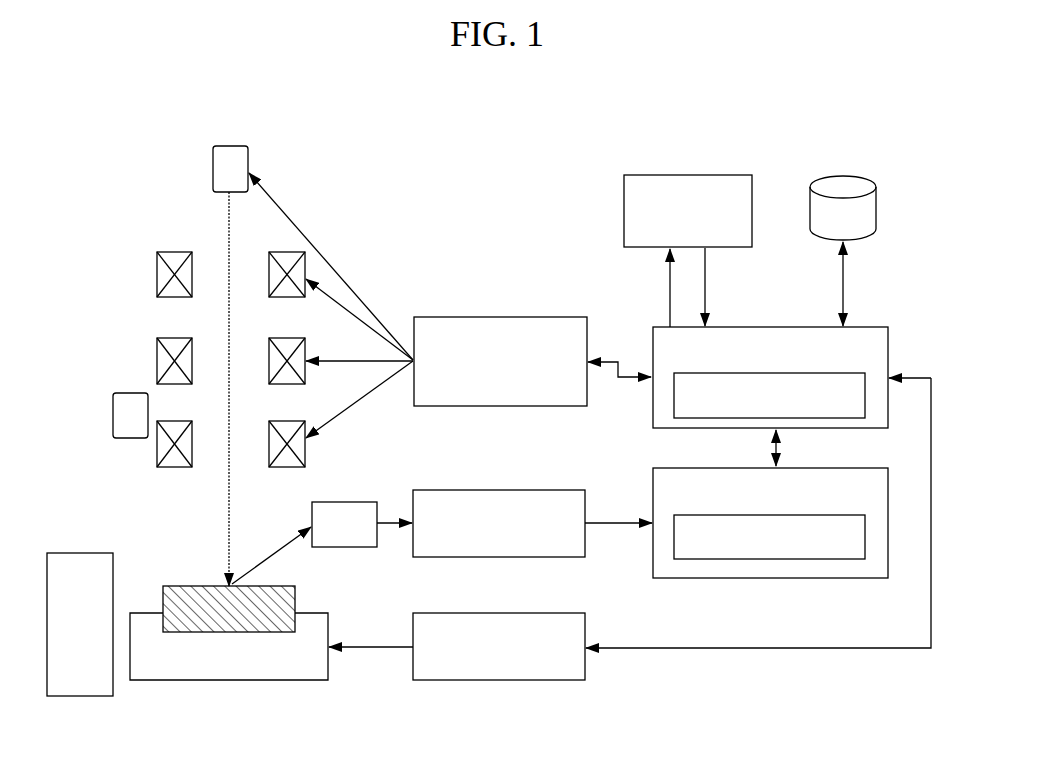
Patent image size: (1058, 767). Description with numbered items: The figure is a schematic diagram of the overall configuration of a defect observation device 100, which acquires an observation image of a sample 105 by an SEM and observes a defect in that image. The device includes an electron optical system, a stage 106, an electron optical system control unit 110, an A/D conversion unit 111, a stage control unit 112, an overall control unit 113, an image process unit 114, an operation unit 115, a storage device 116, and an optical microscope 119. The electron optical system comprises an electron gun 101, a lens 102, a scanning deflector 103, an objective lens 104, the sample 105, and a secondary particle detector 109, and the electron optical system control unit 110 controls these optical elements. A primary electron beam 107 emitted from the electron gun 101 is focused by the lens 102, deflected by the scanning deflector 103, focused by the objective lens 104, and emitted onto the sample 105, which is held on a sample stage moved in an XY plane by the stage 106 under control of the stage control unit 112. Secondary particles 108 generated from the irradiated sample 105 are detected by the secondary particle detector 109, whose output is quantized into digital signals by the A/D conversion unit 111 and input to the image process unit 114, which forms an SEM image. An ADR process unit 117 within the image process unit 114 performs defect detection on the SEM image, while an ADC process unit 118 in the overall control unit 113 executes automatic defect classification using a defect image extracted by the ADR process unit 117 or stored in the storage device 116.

The defect observation device 100 is at (410, 205).
The electron gun 101 is at (213, 167).
The lens 102 is at (157, 272).
The scanning deflector 103 is at (157, 357).
The objective lens 104 is at (157, 450).
The sample 105 is at (296, 598).
The stage 106 is at (229, 681).
The primary electron beam 107 is at (229, 216).
The secondary particles 108 is at (269, 558).
The secondary particle detector 109 is at (346, 502).
The electron optical system control unit 110 is at (487, 317).
The A/D conversion unit 111 is at (487, 490).
The stage control unit 112 is at (490, 681).
The overall control unit 113 is at (876, 327).
The image process unit 114 is at (836, 580).
The operation unit 115 is at (624, 212).
The storage device 116 is at (877, 210).
The ADR process unit 117 is at (690, 560).
The ADC process unit 118 is at (865, 373).
The optical microscope 119 is at (78, 697).